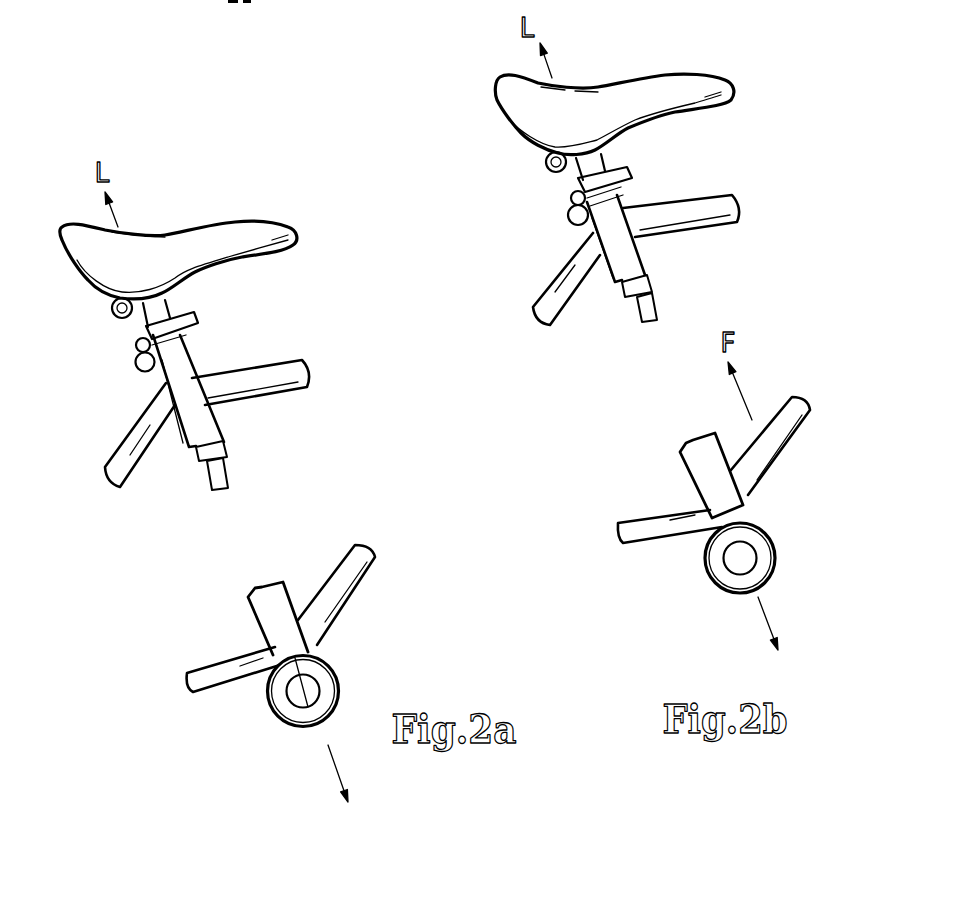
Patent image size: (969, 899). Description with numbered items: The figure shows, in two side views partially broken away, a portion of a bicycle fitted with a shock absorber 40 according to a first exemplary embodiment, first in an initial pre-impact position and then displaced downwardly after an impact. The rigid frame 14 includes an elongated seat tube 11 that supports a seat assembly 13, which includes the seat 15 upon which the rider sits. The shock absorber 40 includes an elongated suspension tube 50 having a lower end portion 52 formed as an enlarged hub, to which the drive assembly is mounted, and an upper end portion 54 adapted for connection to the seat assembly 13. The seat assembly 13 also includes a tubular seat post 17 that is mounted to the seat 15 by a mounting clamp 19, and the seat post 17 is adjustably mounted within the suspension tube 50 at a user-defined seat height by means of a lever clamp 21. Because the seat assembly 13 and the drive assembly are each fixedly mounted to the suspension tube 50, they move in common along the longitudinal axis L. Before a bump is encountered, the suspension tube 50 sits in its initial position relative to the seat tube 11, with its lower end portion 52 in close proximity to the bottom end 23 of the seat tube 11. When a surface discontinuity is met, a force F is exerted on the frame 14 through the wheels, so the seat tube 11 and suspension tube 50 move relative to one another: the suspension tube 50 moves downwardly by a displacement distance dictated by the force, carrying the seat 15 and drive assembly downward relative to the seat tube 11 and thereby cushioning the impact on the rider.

In FIG. 2A, the seat tube 11 is at (197, 417).
In FIG. 2B, the seat tube 11 is at (623, 252).
In FIG. 2A, the seat assembly 13 is at (302, 283).
In FIG. 2B, the seat assembly 13 is at (501, 182).
In FIG. 2A, the rigid frame 14 is at (365, 580).
In FIG. 2B, the rigid frame 14 is at (798, 430).
In FIG. 2A, the seat 15 is at (188, 238).
In FIG. 2B, the seat 15 is at (623, 92).
In FIG. 2A, the tubular seat post 17 is at (190, 317).
In FIG. 2B, the tubular seat post 17 is at (587, 173).
In FIG. 2A, the mounting clamp 19 is at (112, 303).
In FIG. 2B, the mounting clamp 19 is at (546, 157).
In FIG. 2A, the lever clamp 21 is at (147, 347).
In FIG. 2B, the lever clamp 21 is at (623, 167).
In FIG. 2A, the bottom end 23 is at (333, 625).
In FIG. 2B, the bottom end 23 is at (748, 495).
In FIG. 2A, the shock absorber 40 is at (85, 325).
In FIG. 2B, the shock absorber 40 is at (526, 253).
In FIG. 2A, the suspension tube 50 is at (163, 380).
In FIG. 2B, the suspension tube 50 is at (619, 287).
In FIG. 2A, the lower end portion 52 is at (327, 687).
In FIG. 2B, the lower end portion 52 is at (758, 538).
In FIG. 2A, the upper end portion 54 is at (177, 347).
In FIG. 2B, the upper end portion 54 is at (610, 203).